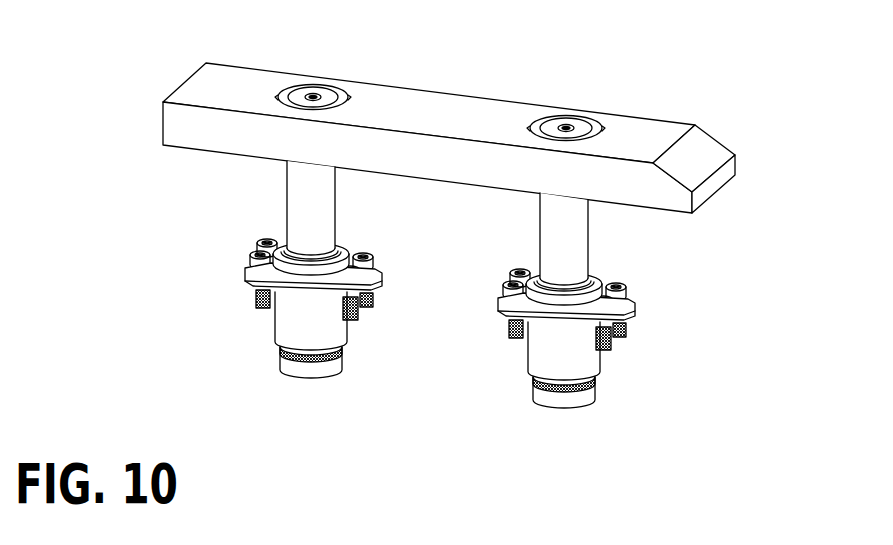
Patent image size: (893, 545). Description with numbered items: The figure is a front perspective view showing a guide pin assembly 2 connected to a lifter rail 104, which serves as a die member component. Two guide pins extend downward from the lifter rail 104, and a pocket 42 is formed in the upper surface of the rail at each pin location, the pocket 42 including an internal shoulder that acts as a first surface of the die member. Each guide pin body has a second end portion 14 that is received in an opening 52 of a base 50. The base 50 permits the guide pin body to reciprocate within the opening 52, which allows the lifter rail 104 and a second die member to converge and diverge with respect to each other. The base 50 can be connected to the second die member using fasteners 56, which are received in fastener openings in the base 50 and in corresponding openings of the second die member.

The guide pin assembly 2 is at (288, 188).
The second end portion 14 is at (585, 283).
The pocket 42 is at (285, 98).
The base 50 is at (247, 280).
The opening 52 is at (285, 244).
The fasteners 56 is at (353, 280).
The lifter rail 104 is at (695, 152).